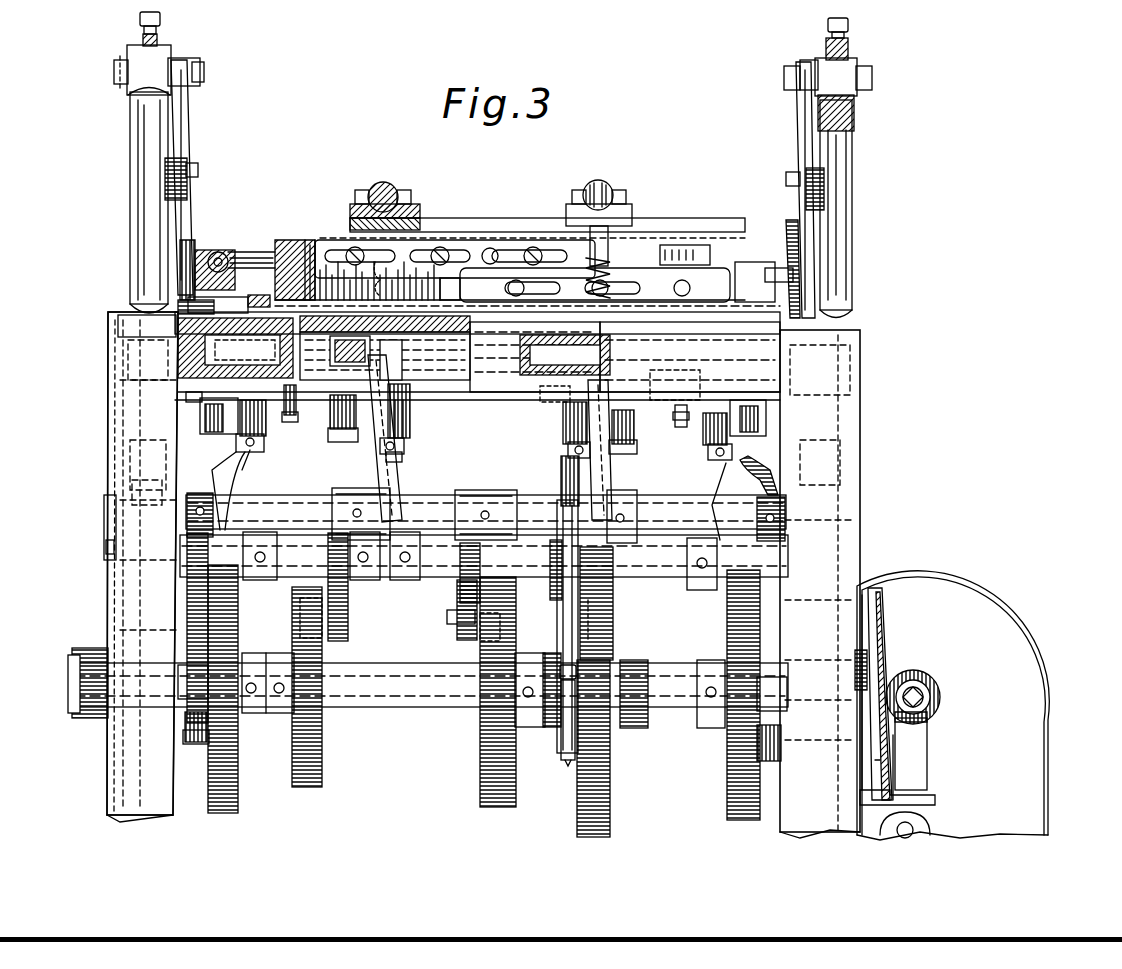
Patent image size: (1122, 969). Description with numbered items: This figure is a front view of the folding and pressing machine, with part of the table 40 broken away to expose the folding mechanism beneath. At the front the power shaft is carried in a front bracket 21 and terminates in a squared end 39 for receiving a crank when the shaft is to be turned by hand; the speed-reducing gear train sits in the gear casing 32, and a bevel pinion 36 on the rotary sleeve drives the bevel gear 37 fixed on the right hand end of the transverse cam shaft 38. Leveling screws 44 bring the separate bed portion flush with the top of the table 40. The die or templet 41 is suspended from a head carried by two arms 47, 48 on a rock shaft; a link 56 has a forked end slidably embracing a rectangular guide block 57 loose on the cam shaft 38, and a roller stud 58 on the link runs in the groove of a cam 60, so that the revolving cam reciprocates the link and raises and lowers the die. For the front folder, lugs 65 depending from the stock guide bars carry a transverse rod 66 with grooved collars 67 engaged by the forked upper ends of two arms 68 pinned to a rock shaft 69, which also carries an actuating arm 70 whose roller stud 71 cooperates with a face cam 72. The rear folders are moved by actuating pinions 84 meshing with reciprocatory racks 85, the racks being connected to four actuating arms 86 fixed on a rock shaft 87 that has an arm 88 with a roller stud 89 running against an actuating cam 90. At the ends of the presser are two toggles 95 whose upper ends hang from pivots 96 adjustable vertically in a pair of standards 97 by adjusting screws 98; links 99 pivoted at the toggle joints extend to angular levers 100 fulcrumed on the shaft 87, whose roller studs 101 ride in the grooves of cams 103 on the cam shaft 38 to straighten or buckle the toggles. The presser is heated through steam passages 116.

The front bracket 21 is at (928, 768).
The gear casing 32 is at (953, 705).
The bevel pinion 36 is at (942, 698).
The bevel gear 37 is at (890, 620).
The cam shaft 38 is at (385, 710).
The squared end 39 is at (935, 718).
The table 40 is at (118, 342).
The die or templet 41 is at (330, 300).
The leveling screws 44 is at (290, 418).
The arm 47 is at (383, 182).
The arm 48 is at (596, 182).
The link 56 is at (560, 595).
The guide block 57 is at (558, 740).
The roller stud 58 is at (600, 642).
The cam 60 is at (612, 782).
The lugs 65 is at (330, 412).
The transverse rod 66 is at (410, 395).
The grooved collars 67 is at (400, 415).
The arms 68 is at (375, 468).
The rock shaft 69 is at (445, 545).
The actuating arm 70 is at (462, 598).
The roller stud 71 is at (485, 640).
The face cam 72 is at (480, 750).
The actuating pinions 84 is at (256, 452).
The racks 85 is at (200, 416).
The actuating arms 86 is at (260, 470).
The rock shaft 87 is at (290, 580).
The arm 88 is at (345, 605).
The roller stud 89 is at (320, 636).
The actuating cam 90 is at (322, 782).
The toggles 95 is at (184, 116).
The pivots 96 is at (178, 64).
The standards 97 is at (135, 122).
The adjusting screws 98 is at (138, 18).
The links 99 is at (175, 168).
The angular levers 100 is at (178, 638).
The roller studs 101 is at (205, 748).
The cams 103 is at (238, 798).
The steam passages 116 is at (210, 255).